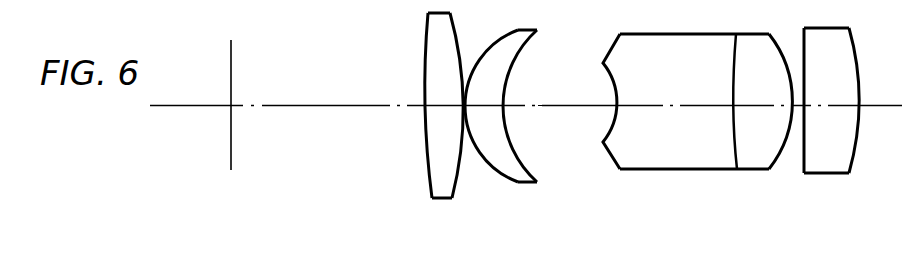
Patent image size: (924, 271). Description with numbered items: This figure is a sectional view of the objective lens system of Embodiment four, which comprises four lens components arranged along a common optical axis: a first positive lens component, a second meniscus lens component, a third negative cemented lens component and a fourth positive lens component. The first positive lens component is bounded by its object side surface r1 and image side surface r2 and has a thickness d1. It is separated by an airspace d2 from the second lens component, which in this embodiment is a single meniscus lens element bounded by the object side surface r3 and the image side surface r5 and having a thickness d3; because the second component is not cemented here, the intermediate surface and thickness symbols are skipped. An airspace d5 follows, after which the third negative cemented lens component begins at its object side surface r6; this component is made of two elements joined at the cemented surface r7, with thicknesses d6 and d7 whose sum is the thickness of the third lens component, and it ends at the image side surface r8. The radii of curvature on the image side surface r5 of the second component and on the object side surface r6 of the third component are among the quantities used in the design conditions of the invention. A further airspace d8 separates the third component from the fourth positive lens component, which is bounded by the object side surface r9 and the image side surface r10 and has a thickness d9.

The thickness of first lens component d1 is at (440, 103).
The airspace between first and second lens components d2 is at (465, 100).
The thickness of second lens component d3 is at (488, 100).
The airspace between second and third lens components d5 is at (560, 100).
The thickness of first element of third lens component d6 is at (680, 102).
The thickness of second element of third lens component d7 is at (755, 102).
The airspace between third and fourth lens components d8 is at (796, 100).
The thickness of fourth lens component d9 is at (834, 100).
The object side surface of first lens component r1 is at (427, 182).
The image side surface of first lens component r2 is at (455, 182).
The object side surface of second lens component r3 is at (505, 177).
The image side surface of second lens component r5 is at (537, 157).
The object side surface of third lens component r6 is at (602, 128).
The cemented surface of third lens component r7 is at (733, 150).
The image side surface of third lens component r8 is at (782, 167).
The object side surface of fourth lens component r9 is at (804, 163).
The image side surface of fourth lens component r10 is at (856, 163).